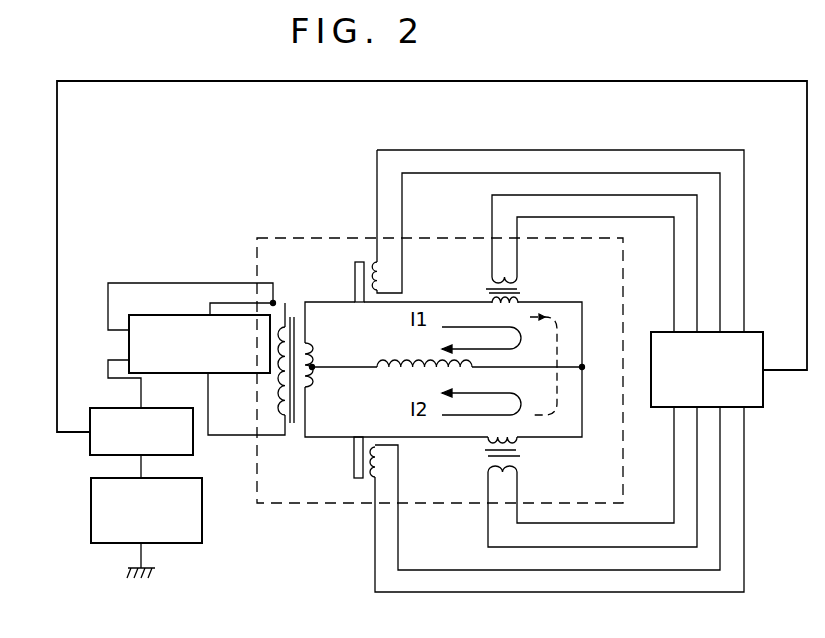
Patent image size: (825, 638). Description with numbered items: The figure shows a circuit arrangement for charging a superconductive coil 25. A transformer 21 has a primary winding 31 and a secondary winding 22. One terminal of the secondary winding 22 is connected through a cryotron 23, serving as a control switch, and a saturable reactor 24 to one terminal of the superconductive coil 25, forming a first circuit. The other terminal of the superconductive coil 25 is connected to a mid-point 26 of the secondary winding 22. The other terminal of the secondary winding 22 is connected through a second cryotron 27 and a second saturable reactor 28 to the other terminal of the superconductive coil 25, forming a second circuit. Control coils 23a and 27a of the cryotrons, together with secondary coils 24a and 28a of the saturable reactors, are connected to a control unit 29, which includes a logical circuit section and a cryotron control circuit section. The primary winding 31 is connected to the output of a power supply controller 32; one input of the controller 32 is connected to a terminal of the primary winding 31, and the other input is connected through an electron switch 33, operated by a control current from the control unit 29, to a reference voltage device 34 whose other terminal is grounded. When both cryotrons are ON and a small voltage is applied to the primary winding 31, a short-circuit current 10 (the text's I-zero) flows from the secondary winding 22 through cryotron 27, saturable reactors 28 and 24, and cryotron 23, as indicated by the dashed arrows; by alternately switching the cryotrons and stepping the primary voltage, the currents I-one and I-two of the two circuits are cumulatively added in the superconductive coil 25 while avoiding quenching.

The load current loop 10 is at (540, 364).
The transformer 21 is at (292, 312).
The secondary winding 22 is at (313, 384).
The cryotron 23 is at (352, 285).
The control coil 23a is at (388, 271).
The saturable reactor 24 is at (519, 291).
The secondary coil 24a is at (519, 262).
The superconductive coil 25 is at (404, 359).
The mid-point 26 is at (313, 363).
The cryotron 27 is at (354, 466).
The control coil 27a is at (384, 465).
The saturable reactor 28 is at (521, 454).
The secondary coil 28a is at (521, 478).
The control unit 29 is at (757, 332).
The primary winding 31 is at (274, 396).
The power supply controller 32 is at (188, 315).
The electron switch 33 is at (116, 408).
The reference voltage device 34 is at (112, 543).